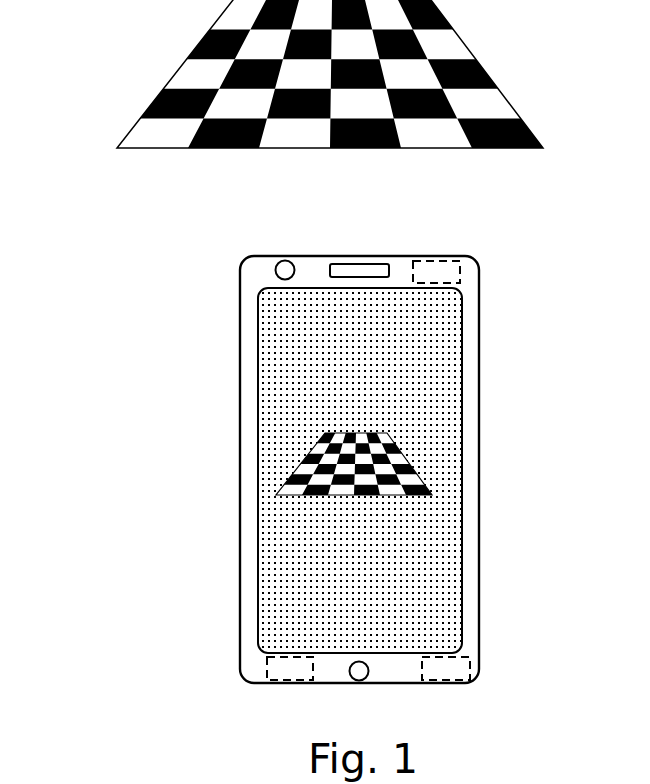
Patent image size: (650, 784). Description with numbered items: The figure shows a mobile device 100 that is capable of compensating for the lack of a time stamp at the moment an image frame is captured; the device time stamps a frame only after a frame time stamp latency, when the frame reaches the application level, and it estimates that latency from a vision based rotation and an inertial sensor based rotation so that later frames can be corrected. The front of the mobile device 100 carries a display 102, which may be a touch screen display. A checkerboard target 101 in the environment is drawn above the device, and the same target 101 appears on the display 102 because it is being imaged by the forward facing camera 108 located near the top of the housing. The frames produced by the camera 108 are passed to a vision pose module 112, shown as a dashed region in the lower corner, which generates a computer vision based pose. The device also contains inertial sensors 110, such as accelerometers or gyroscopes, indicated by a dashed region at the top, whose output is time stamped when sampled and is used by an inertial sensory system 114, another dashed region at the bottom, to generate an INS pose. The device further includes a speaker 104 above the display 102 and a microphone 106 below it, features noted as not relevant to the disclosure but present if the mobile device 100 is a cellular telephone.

The mobile device 100 is at (257, 223).
The target 101 is at (136, 123).
The display 102 is at (463, 418).
The speaker 104 is at (376, 262).
The microphone 106 is at (350, 670).
The forward facing camera 108 is at (275, 269).
The inertial sensors 110 is at (413, 265).
The vision pose module 112 is at (472, 674).
The inertial sensory system (INS) 114 is at (267, 665).